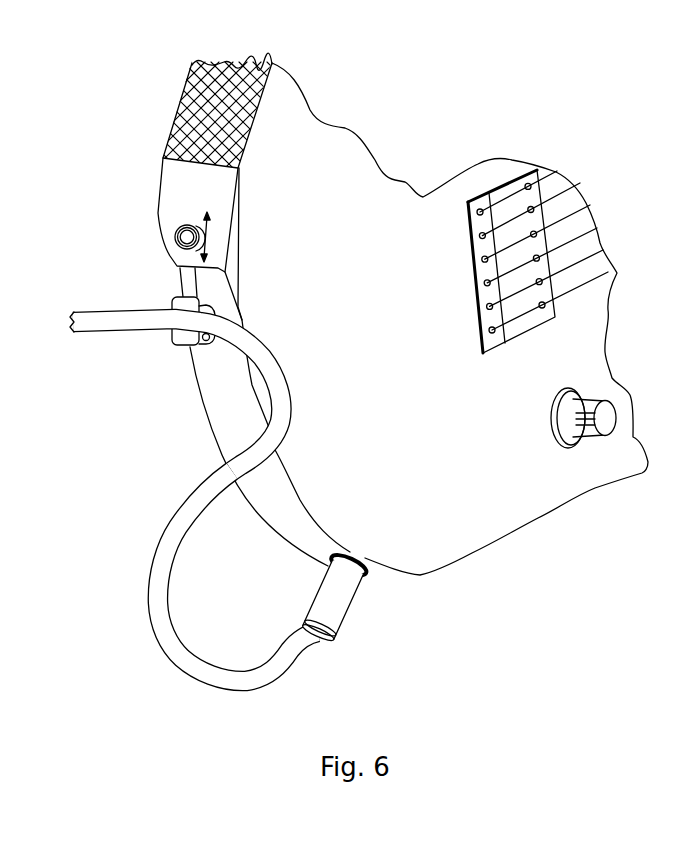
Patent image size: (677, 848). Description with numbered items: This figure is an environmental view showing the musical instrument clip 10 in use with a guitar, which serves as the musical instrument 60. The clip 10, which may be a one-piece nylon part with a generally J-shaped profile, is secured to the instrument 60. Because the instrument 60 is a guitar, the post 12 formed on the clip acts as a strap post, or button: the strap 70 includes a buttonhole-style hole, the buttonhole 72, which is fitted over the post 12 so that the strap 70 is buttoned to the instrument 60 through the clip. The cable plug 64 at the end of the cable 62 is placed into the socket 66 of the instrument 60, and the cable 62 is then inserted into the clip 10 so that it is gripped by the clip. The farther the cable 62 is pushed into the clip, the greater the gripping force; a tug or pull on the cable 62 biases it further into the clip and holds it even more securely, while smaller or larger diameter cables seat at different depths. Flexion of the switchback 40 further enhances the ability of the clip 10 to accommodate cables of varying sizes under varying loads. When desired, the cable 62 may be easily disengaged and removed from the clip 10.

The musical instrument clip 10 is at (249, 274).
The post 12 is at (190, 223).
The switchback 40 is at (157, 360).
The musical instrument 60 is at (482, 574).
The cable 62 is at (293, 673).
The cable plug 64 is at (350, 600).
The socket 66 is at (350, 552).
The strap 70 is at (183, 93).
The buttonhole 72 is at (212, 227).